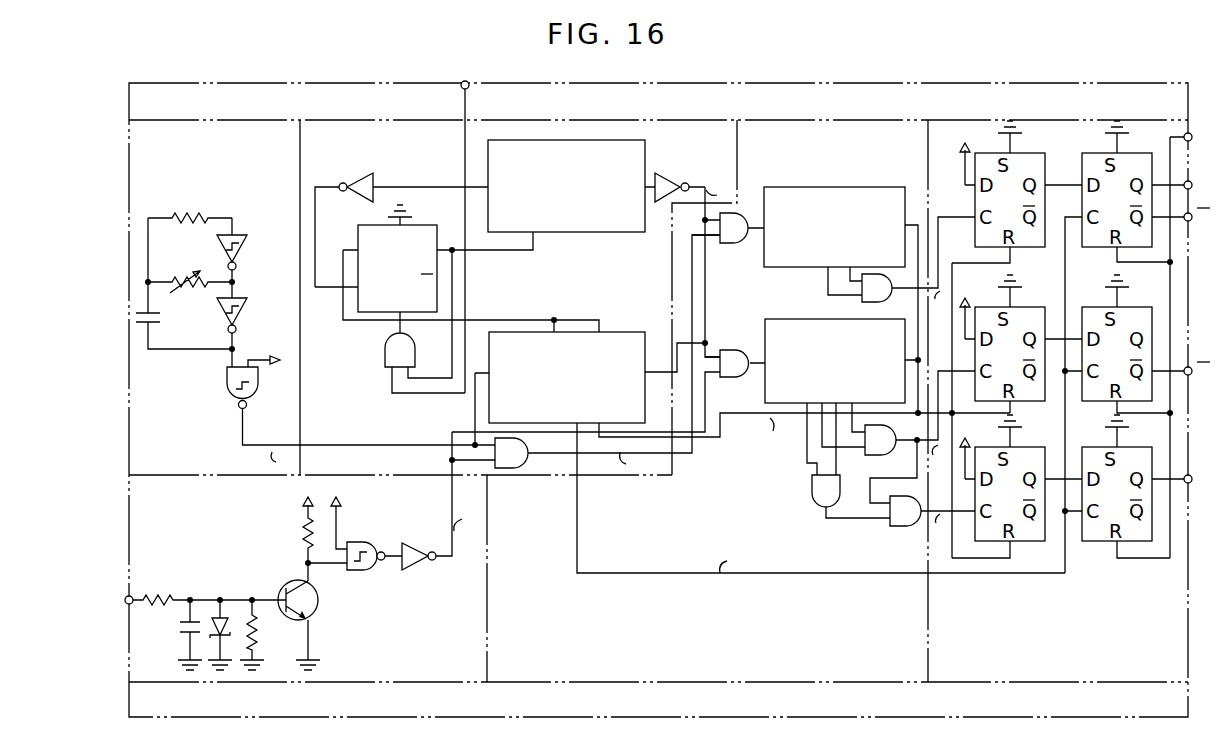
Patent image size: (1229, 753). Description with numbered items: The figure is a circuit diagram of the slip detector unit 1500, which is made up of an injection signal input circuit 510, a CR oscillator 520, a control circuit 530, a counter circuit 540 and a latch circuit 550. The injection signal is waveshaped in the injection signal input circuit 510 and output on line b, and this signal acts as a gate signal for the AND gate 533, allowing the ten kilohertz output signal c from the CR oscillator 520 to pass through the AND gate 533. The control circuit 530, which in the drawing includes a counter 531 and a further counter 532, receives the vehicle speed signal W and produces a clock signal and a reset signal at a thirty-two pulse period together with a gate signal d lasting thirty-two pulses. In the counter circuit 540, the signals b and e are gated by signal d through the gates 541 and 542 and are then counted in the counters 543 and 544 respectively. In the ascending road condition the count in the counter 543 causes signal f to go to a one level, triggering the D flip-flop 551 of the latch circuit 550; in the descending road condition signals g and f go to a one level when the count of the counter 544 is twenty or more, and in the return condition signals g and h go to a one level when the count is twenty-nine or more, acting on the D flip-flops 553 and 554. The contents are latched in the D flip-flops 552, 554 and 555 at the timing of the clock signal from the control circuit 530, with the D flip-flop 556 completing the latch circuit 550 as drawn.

The slip detector unit 1500 is at (1022, 83).
The injection signal input circuit 510 is at (347, 683).
The CR oscillator 520 is at (275, 117).
The control circuit 530 is at (562, 117).
The TC4040 counter 531 is at (587, 232).
The TC4017 counter 532 is at (621, 331).
The AND gate 533 is at (512, 468).
The counter circuit 540 is at (832, 117).
The AND gate 541 is at (750, 246).
The AND gate 542 is at (737, 350).
The counter 543 is at (840, 187).
The counter 544 is at (833, 319).
The latch circuit 550 is at (1043, 117).
The D flip-flop 551 is at (991, 152).
The D flip-flop 552 is at (1102, 152).
The D flip-flop 553 is at (986, 305).
The D flip-flop 554 is at (1103, 305).
The D flip-flop 555 is at (1027, 543).
The D flip-flop 556 is at (1103, 545).